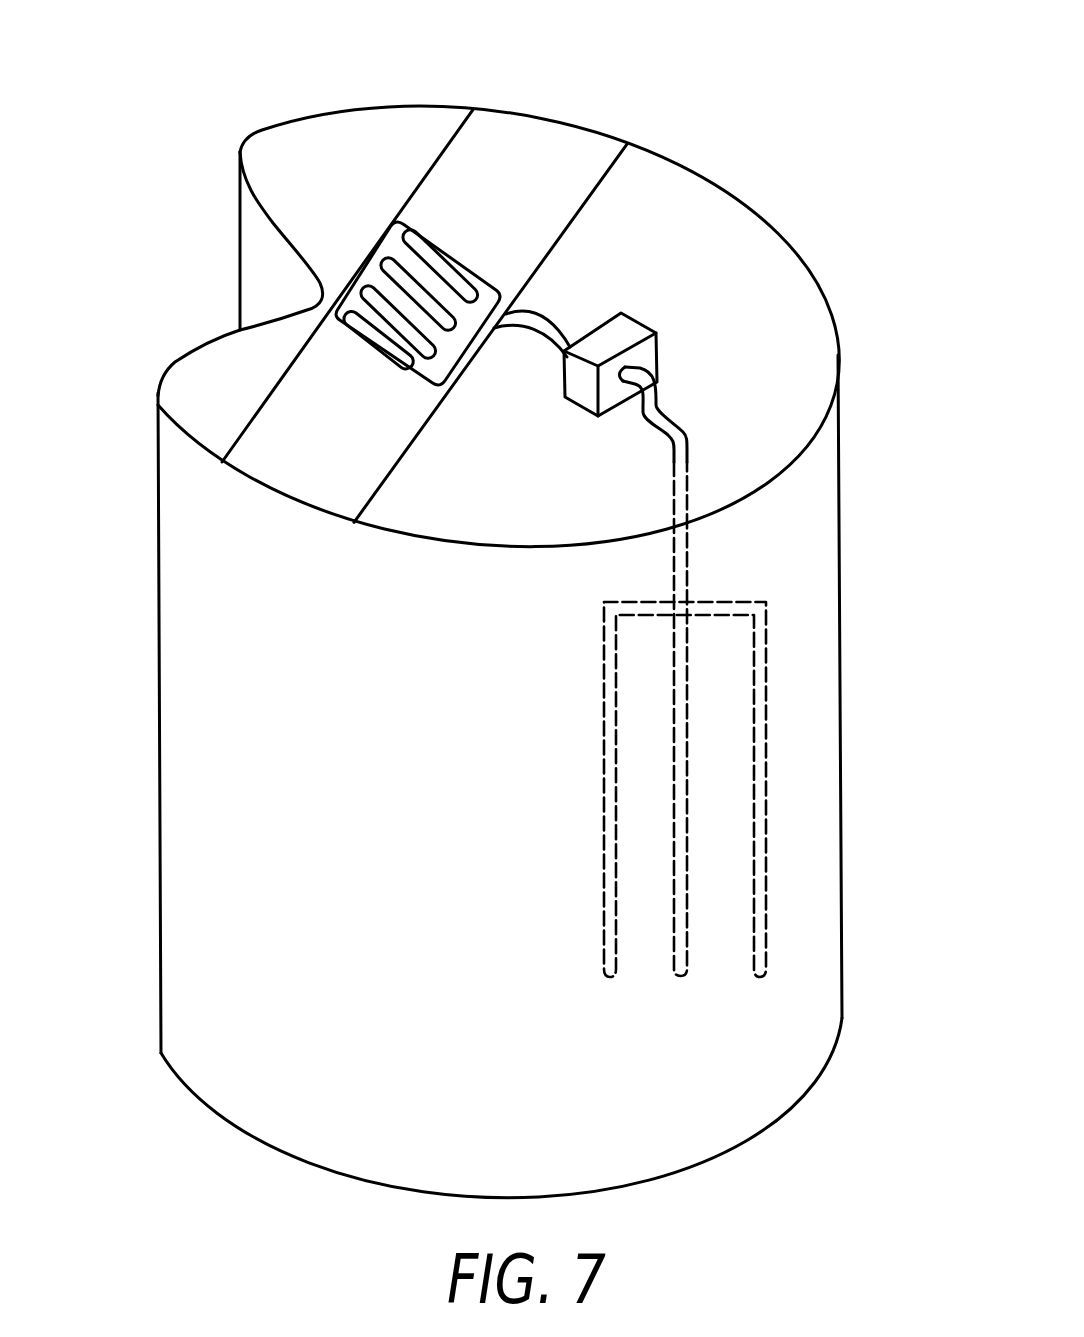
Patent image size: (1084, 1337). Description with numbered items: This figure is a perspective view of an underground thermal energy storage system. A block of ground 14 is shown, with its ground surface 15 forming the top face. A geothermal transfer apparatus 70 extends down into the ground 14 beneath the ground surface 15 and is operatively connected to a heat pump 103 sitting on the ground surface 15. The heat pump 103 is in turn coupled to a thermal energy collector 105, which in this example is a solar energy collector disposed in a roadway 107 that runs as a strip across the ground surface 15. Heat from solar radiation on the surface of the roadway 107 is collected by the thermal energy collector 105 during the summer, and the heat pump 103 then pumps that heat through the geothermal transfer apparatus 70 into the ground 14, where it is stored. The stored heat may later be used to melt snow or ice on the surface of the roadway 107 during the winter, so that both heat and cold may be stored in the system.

The ground 14 is at (243, 803).
The ground surface 15 is at (780, 407).
The geothermal transfer apparatus 70 is at (760, 755).
The heat pump 103 is at (610, 340).
The thermal energy collector 105 is at (440, 257).
The roadway 107 is at (502, 193).